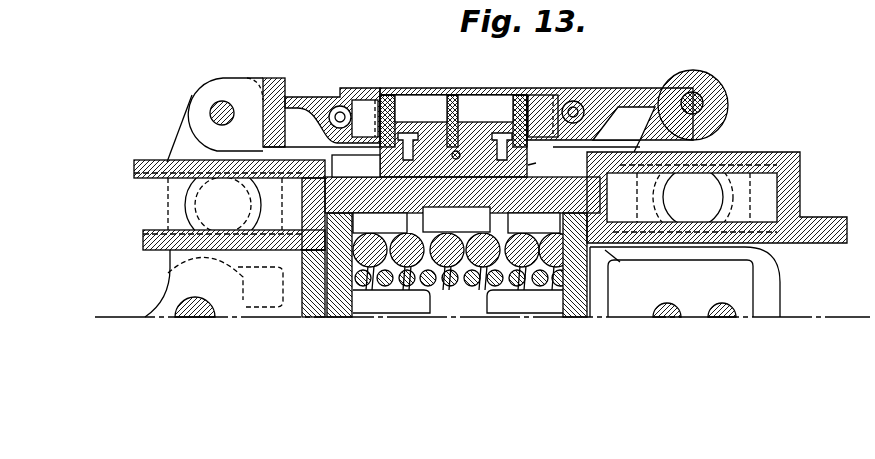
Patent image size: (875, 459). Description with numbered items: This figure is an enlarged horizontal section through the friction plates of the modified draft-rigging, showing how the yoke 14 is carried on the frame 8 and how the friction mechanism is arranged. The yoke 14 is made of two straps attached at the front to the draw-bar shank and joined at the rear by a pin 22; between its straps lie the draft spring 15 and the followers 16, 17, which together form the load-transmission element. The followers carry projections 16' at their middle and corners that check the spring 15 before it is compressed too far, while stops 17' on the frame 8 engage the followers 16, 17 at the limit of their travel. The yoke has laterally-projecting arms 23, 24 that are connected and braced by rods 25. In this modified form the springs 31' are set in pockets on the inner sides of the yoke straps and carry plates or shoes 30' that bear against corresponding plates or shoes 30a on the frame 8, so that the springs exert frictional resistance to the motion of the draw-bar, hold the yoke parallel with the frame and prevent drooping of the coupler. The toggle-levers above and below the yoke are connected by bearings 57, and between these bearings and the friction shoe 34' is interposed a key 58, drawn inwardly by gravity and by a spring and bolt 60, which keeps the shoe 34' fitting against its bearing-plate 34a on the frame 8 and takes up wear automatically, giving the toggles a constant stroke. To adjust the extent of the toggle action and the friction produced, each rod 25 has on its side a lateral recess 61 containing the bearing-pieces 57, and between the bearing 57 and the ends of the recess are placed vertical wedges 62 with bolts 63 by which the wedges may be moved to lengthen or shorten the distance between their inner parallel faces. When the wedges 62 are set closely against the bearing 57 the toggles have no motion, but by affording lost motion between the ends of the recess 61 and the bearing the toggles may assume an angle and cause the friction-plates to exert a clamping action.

The frame 8 is at (808, 156).
The yoke 14 is at (462, 282).
The draft spring 15 is at (468, 262).
The follower 16 is at (337, 281).
The projections 16' is at (458, 317).
The follower 17 is at (547, 281).
The stops 17' is at (501, 248).
The pin 22 is at (189, 319).
The laterally-projecting arm 23 is at (715, 157).
The laterally-projecting arm 24 is at (181, 139).
The rod 25 is at (604, 129).
The plate or shoe 30' is at (494, 201).
The plate or shoe 30a is at (824, 188).
The spring 31' is at (493, 180).
The shoe 34' is at (456, 211).
The bearing-plate 34a is at (548, 162).
The bearing 57 is at (441, 120).
The key 58 is at (466, 99).
The bolt 60 is at (455, 151).
The lateral recess 61 is at (498, 88).
The vertical wedge 62 is at (364, 100).
The bolt 63 is at (340, 106).